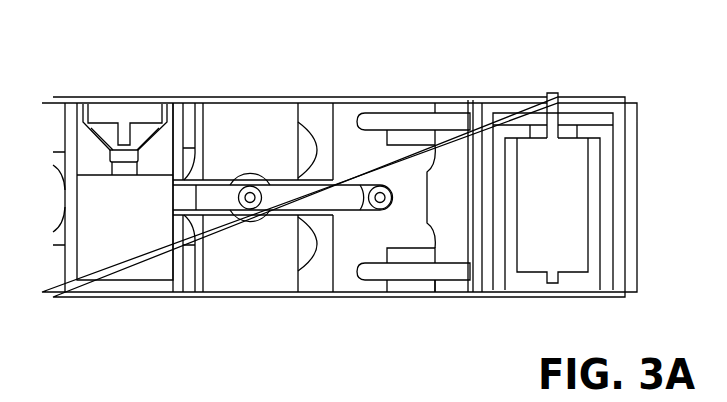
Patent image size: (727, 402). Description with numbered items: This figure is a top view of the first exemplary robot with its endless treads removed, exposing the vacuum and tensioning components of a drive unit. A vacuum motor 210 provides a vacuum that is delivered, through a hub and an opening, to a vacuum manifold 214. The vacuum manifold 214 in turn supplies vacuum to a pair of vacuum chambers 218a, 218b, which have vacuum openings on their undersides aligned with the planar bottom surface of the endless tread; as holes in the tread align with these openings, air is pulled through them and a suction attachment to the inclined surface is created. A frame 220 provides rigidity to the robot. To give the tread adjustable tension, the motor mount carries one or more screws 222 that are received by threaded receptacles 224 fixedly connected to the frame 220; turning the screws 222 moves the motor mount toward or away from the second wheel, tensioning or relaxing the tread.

The vacuum motor 210 is at (95, 258).
The vacuum manifold 214 is at (280, 185).
The vacuum chamber 218a is at (228, 265).
The vacuum chamber 218b is at (350, 260).
The frame 220 is at (325, 103).
The screw 222 is at (458, 113).
The threaded receptacle 224 is at (402, 103).